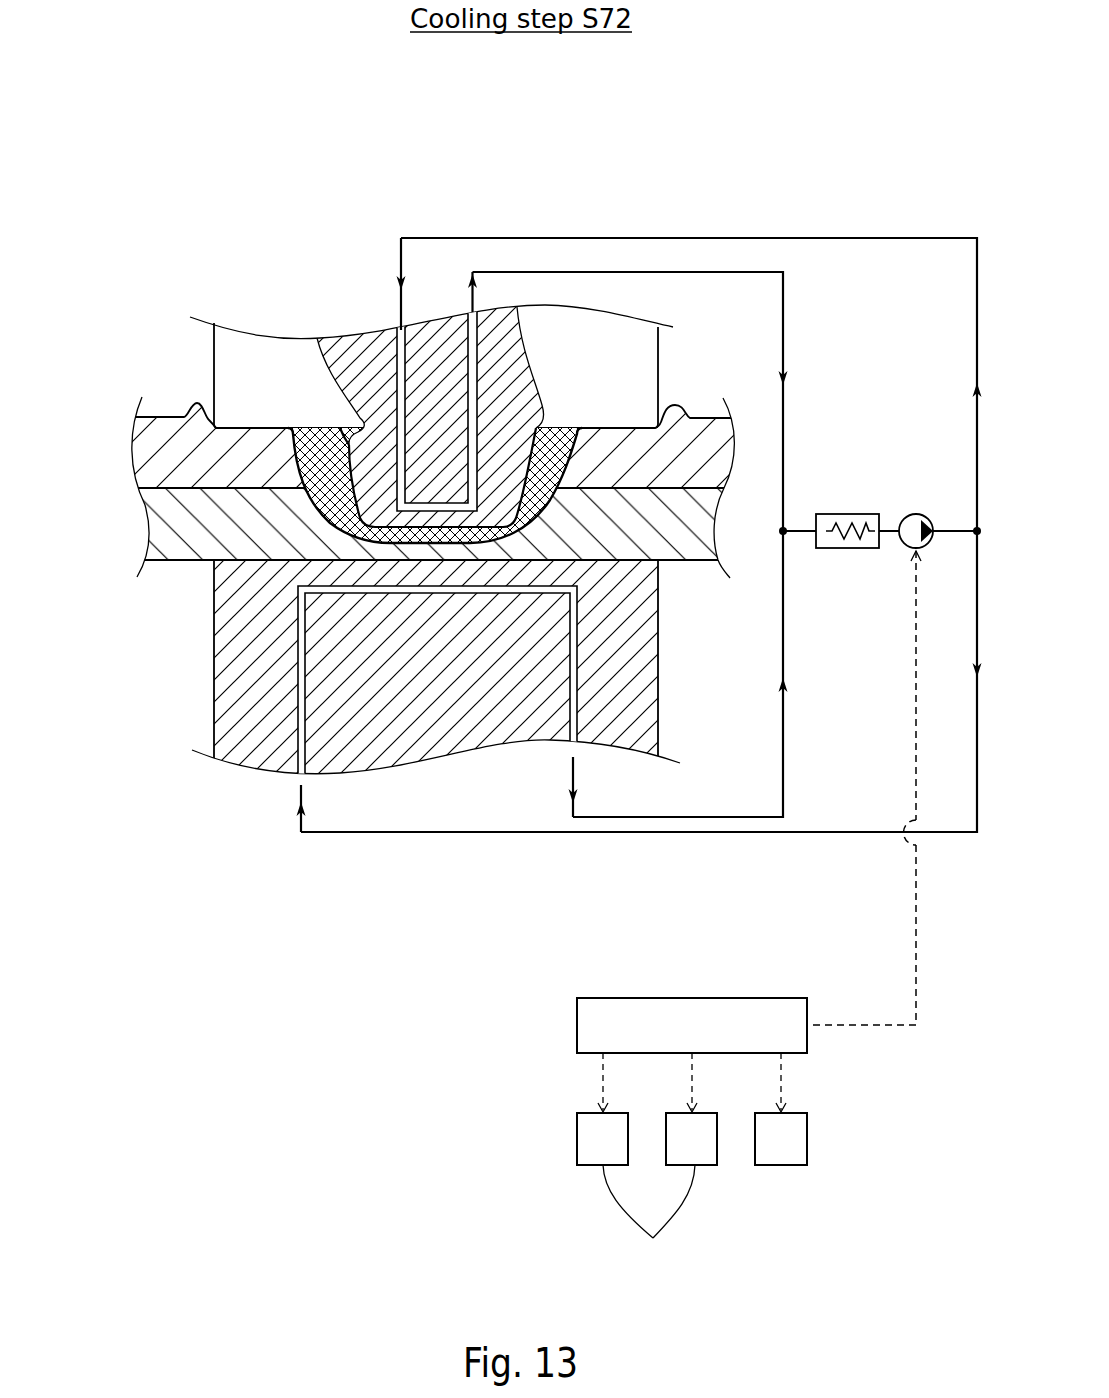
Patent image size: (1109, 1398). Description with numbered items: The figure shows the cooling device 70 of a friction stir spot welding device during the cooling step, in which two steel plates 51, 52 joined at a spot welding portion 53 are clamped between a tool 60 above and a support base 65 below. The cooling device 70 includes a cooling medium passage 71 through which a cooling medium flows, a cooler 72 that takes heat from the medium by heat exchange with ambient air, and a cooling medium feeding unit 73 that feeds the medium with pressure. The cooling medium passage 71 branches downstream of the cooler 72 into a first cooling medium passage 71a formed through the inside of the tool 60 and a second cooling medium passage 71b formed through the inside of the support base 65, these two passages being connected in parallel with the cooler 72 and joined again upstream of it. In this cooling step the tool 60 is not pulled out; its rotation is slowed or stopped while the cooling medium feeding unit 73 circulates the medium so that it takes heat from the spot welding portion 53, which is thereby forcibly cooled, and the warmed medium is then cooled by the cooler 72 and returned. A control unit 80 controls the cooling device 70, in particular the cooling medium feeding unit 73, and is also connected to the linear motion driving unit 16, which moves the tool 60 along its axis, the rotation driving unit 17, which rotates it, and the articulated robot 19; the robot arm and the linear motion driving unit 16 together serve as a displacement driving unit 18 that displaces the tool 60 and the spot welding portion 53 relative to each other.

The linear motion driving unit 16 is at (587, 1158).
The rotation driving unit 17 is at (766, 1158).
The displacement driving unit 18 is at (647, 1194).
The articulated robot 19 is at (676, 1158).
The steel plate 51 is at (148, 452).
The steel plate 52 is at (163, 527).
The spot welding portion 53 is at (318, 492).
The tool 60 is at (245, 343).
The support base 65 is at (232, 697).
The cooling device 70 is at (641, 464).
The cooling medium passage 71 is at (847, 232).
The first cooling medium passage 71a is at (376, 290).
The second cooling medium passage 71b is at (267, 773).
The cooler 72 is at (843, 514).
The cooling medium feeding unit 73 is at (916, 514).
The control unit 80 is at (577, 1022).